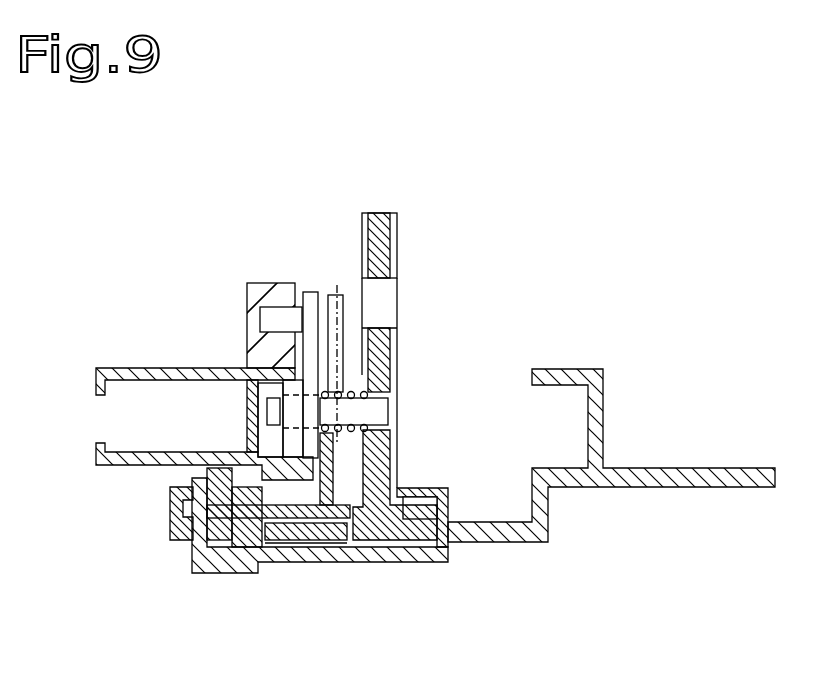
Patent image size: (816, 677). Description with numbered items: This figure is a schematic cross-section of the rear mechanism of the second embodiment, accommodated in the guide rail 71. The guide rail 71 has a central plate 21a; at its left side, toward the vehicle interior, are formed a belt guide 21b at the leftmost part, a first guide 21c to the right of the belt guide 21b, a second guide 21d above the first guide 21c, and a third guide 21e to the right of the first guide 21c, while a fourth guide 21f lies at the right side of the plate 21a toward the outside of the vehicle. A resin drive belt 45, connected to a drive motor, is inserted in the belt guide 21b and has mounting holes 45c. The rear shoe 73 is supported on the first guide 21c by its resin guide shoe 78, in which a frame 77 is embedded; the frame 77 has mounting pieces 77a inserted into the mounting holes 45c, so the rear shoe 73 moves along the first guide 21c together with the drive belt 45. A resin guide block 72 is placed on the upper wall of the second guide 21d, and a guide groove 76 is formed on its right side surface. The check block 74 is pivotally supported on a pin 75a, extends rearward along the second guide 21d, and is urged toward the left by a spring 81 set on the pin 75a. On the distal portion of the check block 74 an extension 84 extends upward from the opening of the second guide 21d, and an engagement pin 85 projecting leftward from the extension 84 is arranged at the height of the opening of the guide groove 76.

The plate 21a is at (500, 522).
The belt guide 21b is at (212, 545).
The first guide 21c is at (307, 550).
The second guide 21d is at (290, 440).
The third guide 21e is at (398, 547).
The fourth guide 21f is at (573, 468).
The drive belt 45 is at (192, 543).
The mounting holes 45c is at (200, 513).
The guide rail 71 is at (660, 468).
The guide block 72 is at (255, 343).
The rear shoe 73 is at (277, 533).
The check block 74 is at (340, 298).
The pin 75a is at (375, 415).
The guide groove 76 is at (280, 320).
The frame 77 is at (327, 490).
The mounting pieces 77a is at (240, 525).
The guide shoe 78 is at (300, 542).
The spring 81 is at (372, 390).
The extension 84 is at (312, 292).
The engagement pin 85 is at (262, 318).